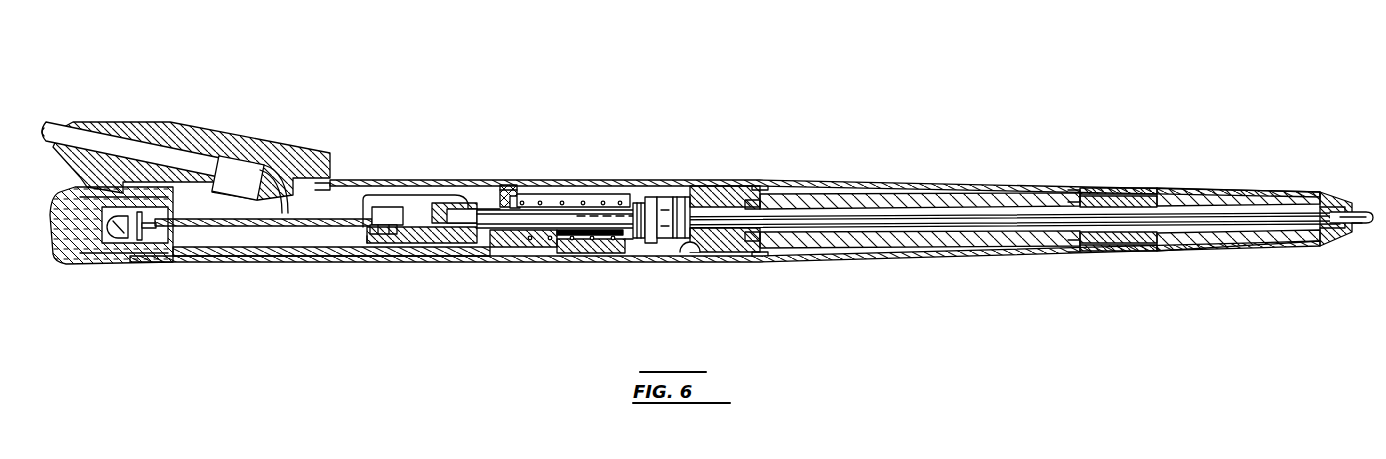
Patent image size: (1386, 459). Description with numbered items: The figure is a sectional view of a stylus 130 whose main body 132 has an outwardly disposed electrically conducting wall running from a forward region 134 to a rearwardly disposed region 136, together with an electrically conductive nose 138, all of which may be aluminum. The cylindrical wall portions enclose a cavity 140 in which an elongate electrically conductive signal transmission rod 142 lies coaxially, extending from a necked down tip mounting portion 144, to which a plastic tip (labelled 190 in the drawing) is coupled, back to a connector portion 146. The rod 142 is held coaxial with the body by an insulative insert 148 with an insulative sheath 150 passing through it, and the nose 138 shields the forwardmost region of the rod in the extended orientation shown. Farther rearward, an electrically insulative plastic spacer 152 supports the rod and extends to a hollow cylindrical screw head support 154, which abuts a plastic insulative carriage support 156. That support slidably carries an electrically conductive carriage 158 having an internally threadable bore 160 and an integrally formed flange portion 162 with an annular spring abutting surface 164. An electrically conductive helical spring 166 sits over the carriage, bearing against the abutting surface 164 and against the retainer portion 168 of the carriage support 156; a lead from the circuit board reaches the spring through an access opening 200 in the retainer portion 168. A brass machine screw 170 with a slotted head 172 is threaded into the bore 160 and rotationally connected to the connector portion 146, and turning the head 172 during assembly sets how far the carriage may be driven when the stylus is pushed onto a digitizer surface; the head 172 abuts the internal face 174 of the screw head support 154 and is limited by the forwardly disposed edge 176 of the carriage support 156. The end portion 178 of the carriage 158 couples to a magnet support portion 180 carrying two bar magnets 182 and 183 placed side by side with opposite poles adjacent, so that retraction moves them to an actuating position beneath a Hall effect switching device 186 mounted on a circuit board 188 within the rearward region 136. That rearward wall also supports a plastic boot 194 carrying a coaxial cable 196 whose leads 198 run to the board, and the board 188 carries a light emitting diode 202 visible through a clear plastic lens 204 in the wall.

The stylus 130 is at (852, 50).
The main body 132 is at (758, 156).
The forward region 134 is at (847, 182).
The rearwardly disposed region 136 is at (468, 182).
The nose 138 is at (1177, 192).
The cavity 140 is at (578, 193).
The signal transmission rod 142 is at (930, 217).
The tip mounting portion 144 is at (1362, 225).
The connector portion 146 is at (660, 240).
The insulative insert 148 is at (1120, 192).
The insulative sheath 150 is at (1217, 197).
The spacer 152 is at (867, 249).
The screw head support 154 is at (688, 256).
The carriage support 156 is at (540, 230).
The carriage 158 is at (533, 244).
The internally threadable bore 160 is at (593, 219).
The flange portion 162 is at (632, 240).
The annular spring abutting surface 164 is at (630, 236).
The helical spring 166 is at (562, 194).
The retainer portion 168 is at (517, 190).
The machine screw 170 is at (645, 240).
The slotted head 172 is at (680, 198).
The internal face 174 is at (697, 252).
The forwardly disposed edge 176 is at (651, 245).
The end portion 178 is at (453, 210).
The magnet support portion 180 is at (432, 245).
The bar magnet 182 is at (375, 245).
The bar magnet 183 is at (398, 236).
The Hall effect switching device 186 is at (386, 207).
The circuit board 188 is at (223, 226).
The tip 190 is at (1375, 213).
The plastic boot 194 is at (212, 140).
The coaxial cable 196 is at (54, 126).
The leads 198 is at (270, 212).
The access opening 200 is at (520, 207).
The light emitting diode 202 is at (122, 240).
The clear plastic lens 204 is at (56, 258).